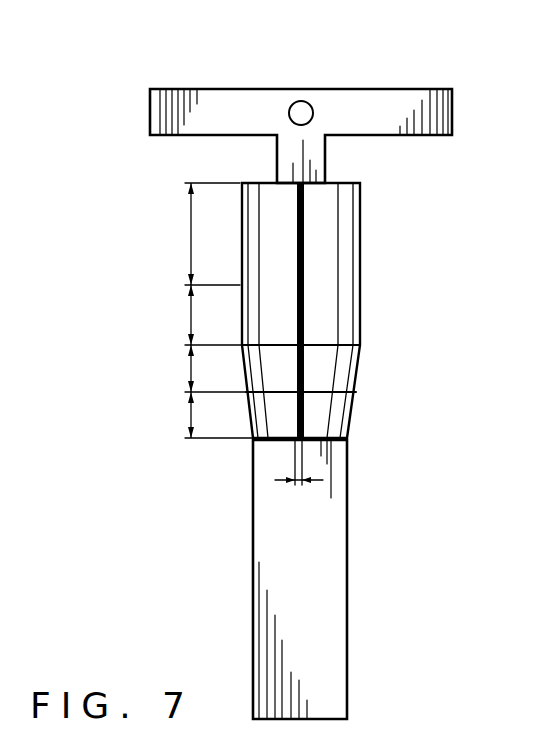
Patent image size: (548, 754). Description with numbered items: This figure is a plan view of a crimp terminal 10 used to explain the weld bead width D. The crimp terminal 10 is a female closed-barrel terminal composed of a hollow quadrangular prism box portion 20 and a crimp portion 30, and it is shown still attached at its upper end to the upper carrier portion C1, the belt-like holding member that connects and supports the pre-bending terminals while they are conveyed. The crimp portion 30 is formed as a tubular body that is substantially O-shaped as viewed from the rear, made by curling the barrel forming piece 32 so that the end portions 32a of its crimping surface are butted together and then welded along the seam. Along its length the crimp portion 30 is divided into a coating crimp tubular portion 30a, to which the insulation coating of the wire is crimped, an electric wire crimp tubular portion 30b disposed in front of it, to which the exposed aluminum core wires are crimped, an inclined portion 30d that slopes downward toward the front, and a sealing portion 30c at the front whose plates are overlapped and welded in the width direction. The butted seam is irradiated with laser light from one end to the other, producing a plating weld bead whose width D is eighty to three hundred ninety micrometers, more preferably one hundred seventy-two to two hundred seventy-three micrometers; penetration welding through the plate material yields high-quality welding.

The upper carrier portion C1 is at (366, 103).
The crimp terminal 10 is at (375, 451).
The box portion 20 is at (330, 594).
The crimp portion 30 is at (369, 310).
The coating crimp tubular portion 30a is at (191, 240).
The electric wire crimp tubular portion 30b is at (191, 312).
The sealing portion 30c is at (191, 415).
The inclined portion 30d is at (191, 372).
The barrel forming piece 32 is at (362, 293).
The end portion 32a is at (304, 213).
The weld bead width D is at (299, 496).